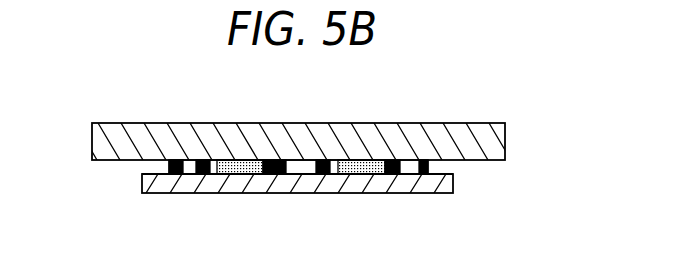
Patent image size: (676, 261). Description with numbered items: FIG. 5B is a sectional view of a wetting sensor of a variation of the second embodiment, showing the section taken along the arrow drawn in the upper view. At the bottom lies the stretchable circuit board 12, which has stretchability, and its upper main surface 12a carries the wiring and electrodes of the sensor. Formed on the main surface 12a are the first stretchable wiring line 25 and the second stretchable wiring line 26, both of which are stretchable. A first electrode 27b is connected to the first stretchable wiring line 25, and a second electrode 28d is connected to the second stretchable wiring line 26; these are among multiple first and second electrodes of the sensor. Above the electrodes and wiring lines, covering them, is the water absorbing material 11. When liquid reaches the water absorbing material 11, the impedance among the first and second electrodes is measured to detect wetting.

The water absorbing material 11 is at (477, 143).
The stretchable circuit board 12 is at (455, 182).
The main surface 12a is at (430, 167).
The first stretchable wiring line 25 is at (277, 162).
The second stretchable wiring line 26 is at (173, 162).
The first electrode 27b is at (240, 170).
The second electrode 28d is at (362, 170).